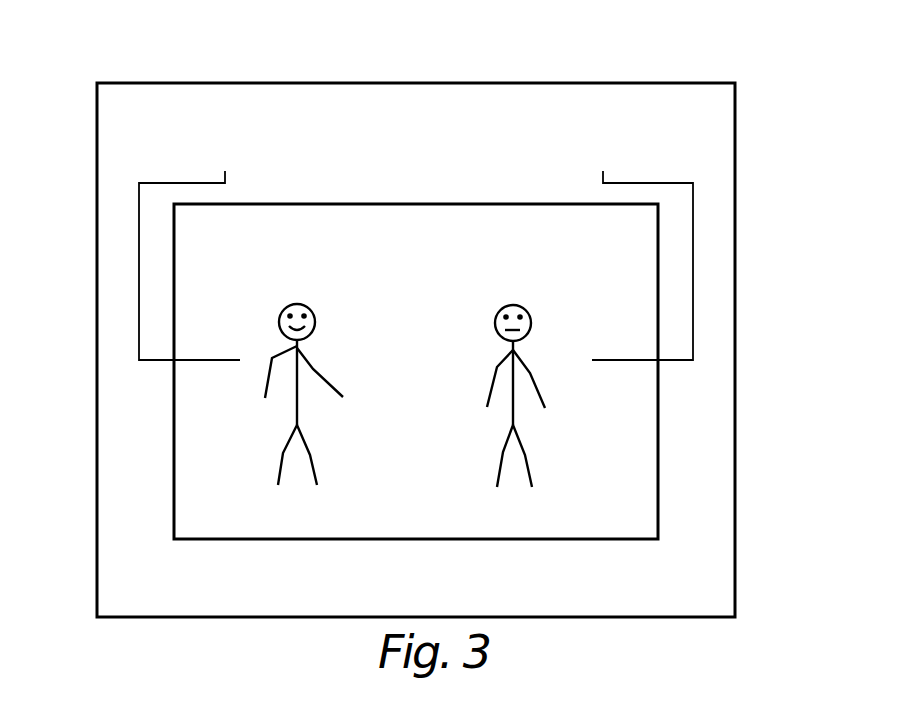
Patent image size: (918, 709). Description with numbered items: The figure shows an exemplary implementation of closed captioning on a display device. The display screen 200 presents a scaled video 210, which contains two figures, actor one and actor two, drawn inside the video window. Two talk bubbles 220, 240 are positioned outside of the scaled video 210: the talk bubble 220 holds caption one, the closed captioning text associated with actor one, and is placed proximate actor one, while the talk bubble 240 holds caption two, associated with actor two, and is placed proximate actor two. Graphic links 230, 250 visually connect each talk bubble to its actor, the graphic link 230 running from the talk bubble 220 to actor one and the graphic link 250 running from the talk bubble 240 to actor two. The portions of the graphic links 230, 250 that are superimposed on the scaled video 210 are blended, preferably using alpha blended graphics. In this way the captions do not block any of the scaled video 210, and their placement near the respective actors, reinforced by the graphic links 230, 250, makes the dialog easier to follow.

The display screen 200 is at (735, 124).
The scaled video 210 is at (363, 540).
The talk bubble 220 is at (210, 136).
The graphic link 230 is at (139, 286).
The talk bubble 240 is at (601, 137).
The graphic link 250 is at (693, 272).